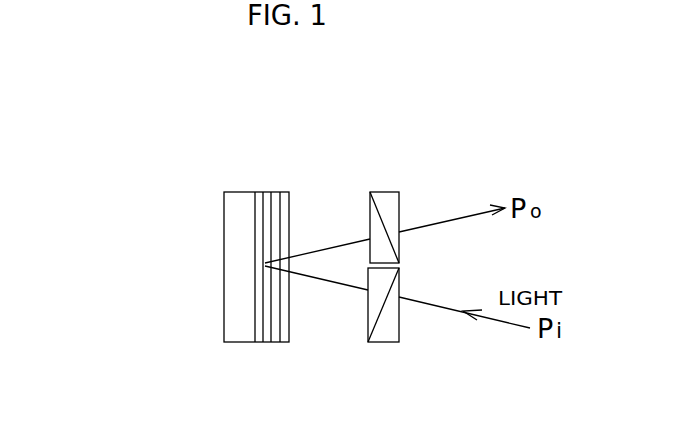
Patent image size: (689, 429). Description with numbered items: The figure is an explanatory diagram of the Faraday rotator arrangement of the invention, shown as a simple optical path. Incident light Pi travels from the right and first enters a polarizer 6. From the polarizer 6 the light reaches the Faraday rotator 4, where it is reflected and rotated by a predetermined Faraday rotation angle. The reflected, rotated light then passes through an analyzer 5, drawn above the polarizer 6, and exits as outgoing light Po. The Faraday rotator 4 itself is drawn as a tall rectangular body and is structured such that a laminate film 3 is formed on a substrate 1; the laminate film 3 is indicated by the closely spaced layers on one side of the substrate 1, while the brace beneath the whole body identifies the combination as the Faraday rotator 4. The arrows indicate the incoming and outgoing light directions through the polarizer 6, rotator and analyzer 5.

The substrate 1 is at (223, 263).
The laminate film 3 is at (295, 168).
The Faraday rotator 4 is at (201, 270).
The analyzer 5 is at (412, 180).
The polarizer 6 is at (390, 322).